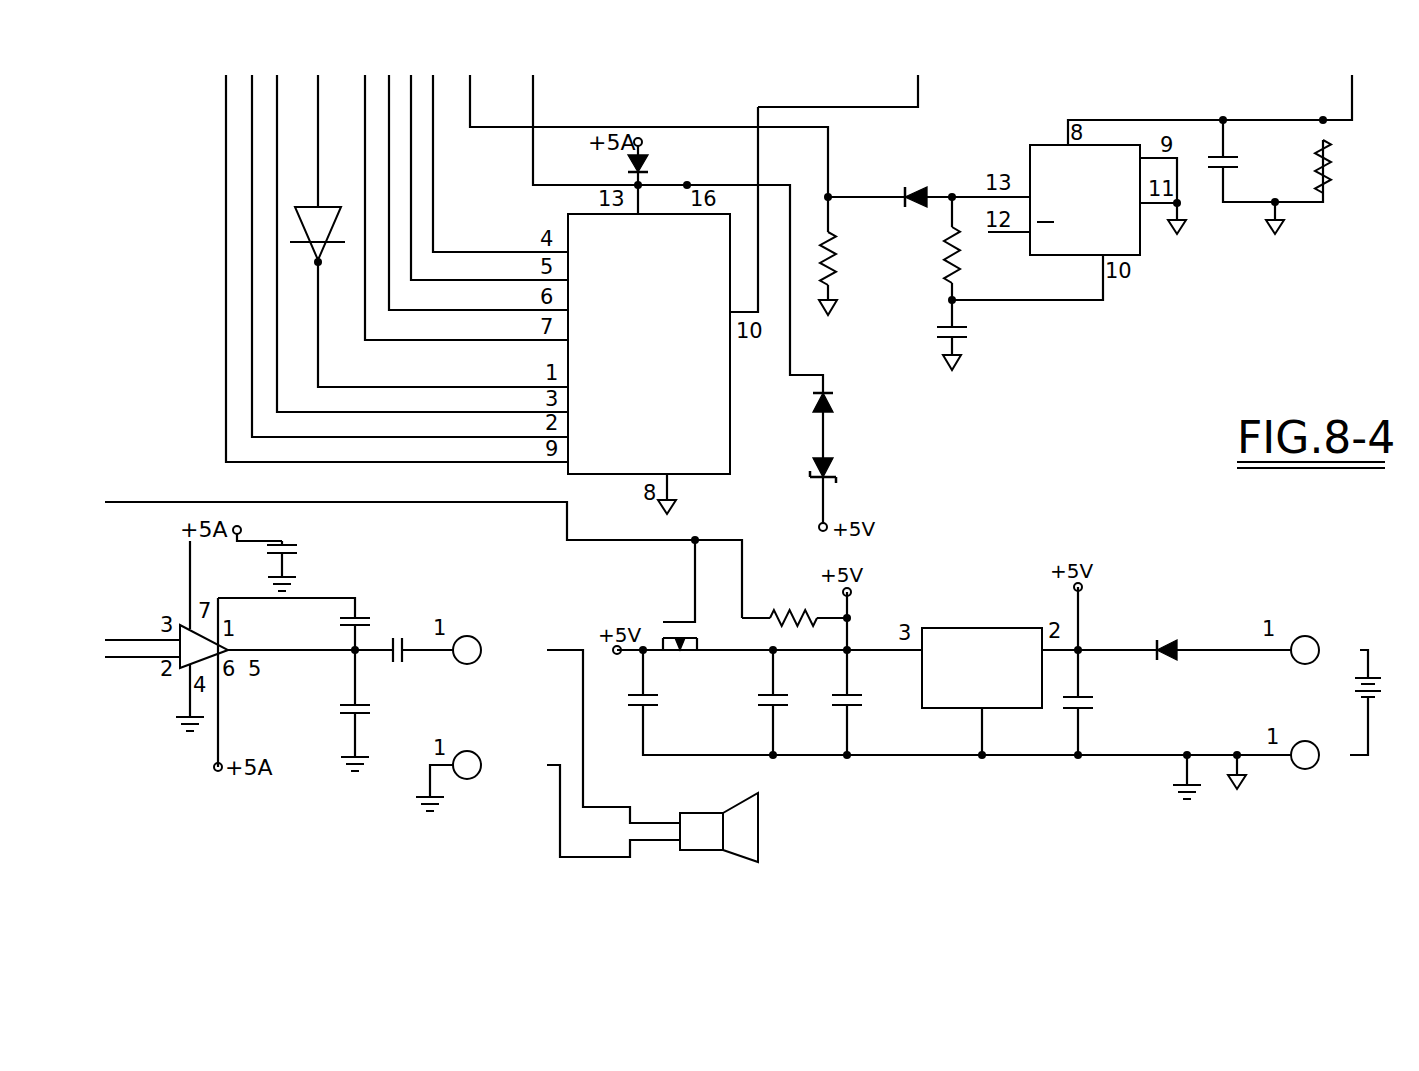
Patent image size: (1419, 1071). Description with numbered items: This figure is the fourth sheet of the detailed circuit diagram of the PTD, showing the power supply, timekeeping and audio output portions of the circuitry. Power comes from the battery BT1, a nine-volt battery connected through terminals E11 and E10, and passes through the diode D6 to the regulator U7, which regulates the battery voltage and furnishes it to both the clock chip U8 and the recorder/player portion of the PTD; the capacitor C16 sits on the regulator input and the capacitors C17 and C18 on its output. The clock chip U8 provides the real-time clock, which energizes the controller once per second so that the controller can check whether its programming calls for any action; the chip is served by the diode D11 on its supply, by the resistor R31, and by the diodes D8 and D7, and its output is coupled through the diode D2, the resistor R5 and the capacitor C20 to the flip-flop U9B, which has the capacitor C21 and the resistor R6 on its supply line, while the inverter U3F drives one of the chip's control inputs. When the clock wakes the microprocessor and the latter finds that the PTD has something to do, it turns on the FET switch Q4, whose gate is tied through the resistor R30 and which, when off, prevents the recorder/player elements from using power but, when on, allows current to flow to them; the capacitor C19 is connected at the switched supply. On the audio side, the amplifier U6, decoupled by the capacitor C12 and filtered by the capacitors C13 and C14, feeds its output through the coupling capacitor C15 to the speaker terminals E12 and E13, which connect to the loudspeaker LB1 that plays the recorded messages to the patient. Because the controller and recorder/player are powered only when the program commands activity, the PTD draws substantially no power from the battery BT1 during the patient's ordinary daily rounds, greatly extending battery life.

The inverter gate U3F is at (321, 241).
The clock chip U8 is at (649, 360).
The diode D11 is at (664, 180).
The resistor R31 is at (852, 241).
The diode D2 is at (915, 181).
The resistor R5 is at (969, 255).
The capacitor C20 is at (975, 322).
The flip-flop U9B is at (1066, 186).
The capacitor C21 is at (1245, 157).
The resistor R6 is at (1339, 166).
The diode D8 is at (842, 397).
The zener diode D7 is at (840, 467).
The audio amplifier U6 is at (224, 644).
The capacitor C12 is at (304, 551).
The capacitor C13 is at (332, 622).
The capacitor C14 is at (336, 703).
The capacitor C15 is at (401, 656).
The speaker positive terminal E12 is at (496, 631).
The speaker negative terminal E13 is at (490, 779).
The loudspeaker LB1 is at (719, 834).
The FET switch Q4 is at (674, 620).
The capacitor C19 is at (666, 690).
The resistor R30 is at (793, 605).
The capacitor C18 is at (789, 711).
The capacitor C17 is at (865, 699).
The regulator U7 is at (982, 651).
The capacitor C16 is at (1100, 691).
The diode D6 is at (1167, 633).
The battery positive terminal E11 is at (1320, 631).
The battery BT1 is at (1340, 695).
The battery negative terminal E10 is at (1316, 769).